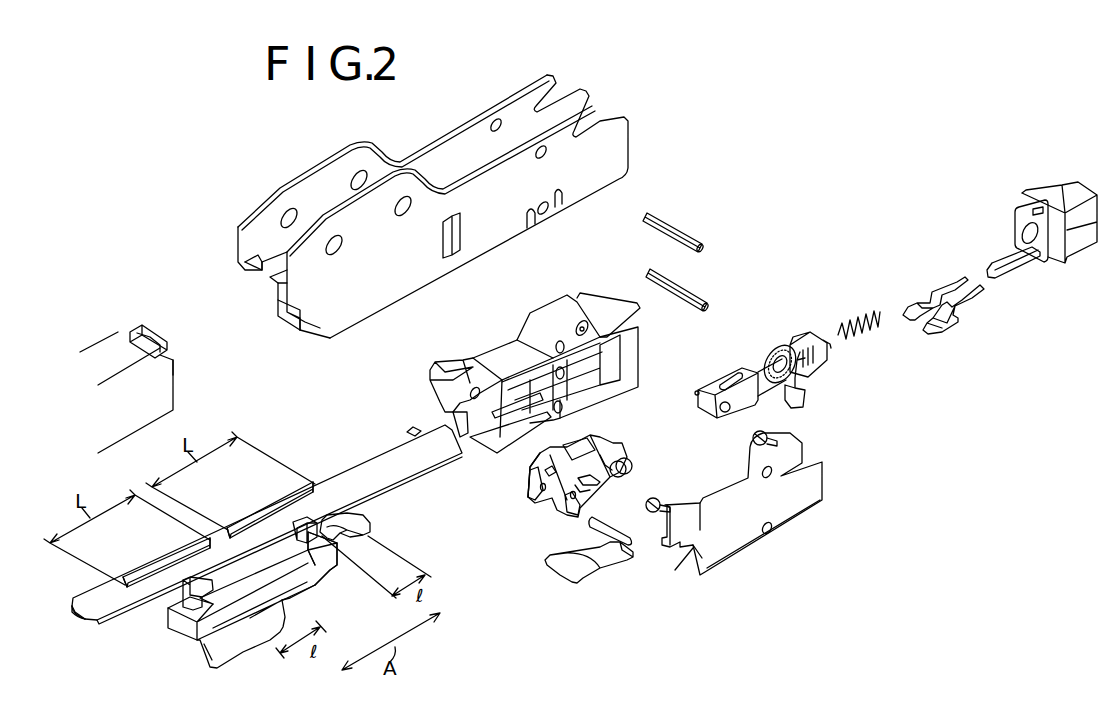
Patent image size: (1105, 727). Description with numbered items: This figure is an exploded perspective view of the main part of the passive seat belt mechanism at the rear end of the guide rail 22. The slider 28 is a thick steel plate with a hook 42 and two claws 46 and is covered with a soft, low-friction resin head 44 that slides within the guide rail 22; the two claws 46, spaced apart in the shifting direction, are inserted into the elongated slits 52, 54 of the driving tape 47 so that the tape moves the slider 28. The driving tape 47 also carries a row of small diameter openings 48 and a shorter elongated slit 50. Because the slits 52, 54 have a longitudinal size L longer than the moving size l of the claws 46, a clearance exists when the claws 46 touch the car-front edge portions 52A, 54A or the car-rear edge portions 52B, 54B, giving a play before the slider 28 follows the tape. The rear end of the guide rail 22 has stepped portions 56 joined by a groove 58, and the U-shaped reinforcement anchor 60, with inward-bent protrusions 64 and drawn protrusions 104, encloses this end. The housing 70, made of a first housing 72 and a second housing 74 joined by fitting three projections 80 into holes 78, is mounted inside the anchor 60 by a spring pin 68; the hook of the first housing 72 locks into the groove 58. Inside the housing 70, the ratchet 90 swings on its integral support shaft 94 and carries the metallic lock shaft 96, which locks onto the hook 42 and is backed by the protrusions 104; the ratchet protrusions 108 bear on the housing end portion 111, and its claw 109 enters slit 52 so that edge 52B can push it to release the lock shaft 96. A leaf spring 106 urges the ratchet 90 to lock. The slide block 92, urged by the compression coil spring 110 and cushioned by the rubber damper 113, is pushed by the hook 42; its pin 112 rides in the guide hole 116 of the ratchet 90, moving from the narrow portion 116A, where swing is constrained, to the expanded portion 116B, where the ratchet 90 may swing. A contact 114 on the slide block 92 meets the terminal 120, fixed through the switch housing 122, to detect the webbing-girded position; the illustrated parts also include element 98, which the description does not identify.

The guide rail 22 is at (100, 322).
The slider 28 is at (278, 608).
The hook 42 is at (370, 530).
The head 44 is at (318, 572).
The claw 46 is at (330, 505).
The driving tape 47 is at (98, 614).
The small diameter openings 48 is at (415, 440).
The elongated slit 50 is at (344, 465).
The elongated slit 52 is at (257, 520).
The longitudinal edge portion 52A is at (227, 528).
The longitudinal edge portion 52B is at (293, 492).
The elongated slit 54 is at (152, 577).
The longitudinal edge portion 54A is at (123, 580).
The longitudinal edge portion 54B is at (187, 547).
The stepped portions 56 is at (124, 328).
The groove 58 is at (160, 340).
The reinforcement anchor 60 is at (437, 145).
The protrusions 64 is at (240, 272).
The spring pin 68 is at (675, 225).
The housing 70 is at (494, 325).
The first housing 72 is at (428, 372).
The second housing 74 is at (713, 560).
The holes 78 is at (589, 320).
The projections 80 is at (777, 437).
The ratchet 90 is at (612, 438).
The slide block 92 is at (760, 368).
The support shaft 94 is at (633, 470).
The lock shaft 96 is at (592, 535).
The hook 98 is at (535, 503).
The protrusions 104 is at (443, 243).
The leaf spring 106 is at (585, 577).
The protrusions 108 is at (537, 480).
The claw 109 is at (578, 455).
The compression coil spring 110 is at (858, 336).
The end portion 111 is at (445, 440).
The pin 112 is at (703, 388).
The rubber damper 113 is at (770, 343).
The contact 114 is at (806, 398).
The guide hole 116 is at (600, 450).
The narrow portion 116A is at (548, 468).
The expanded portion 116B is at (602, 480).
The terminal 120 is at (918, 300).
The switch housing 122 is at (1083, 240).